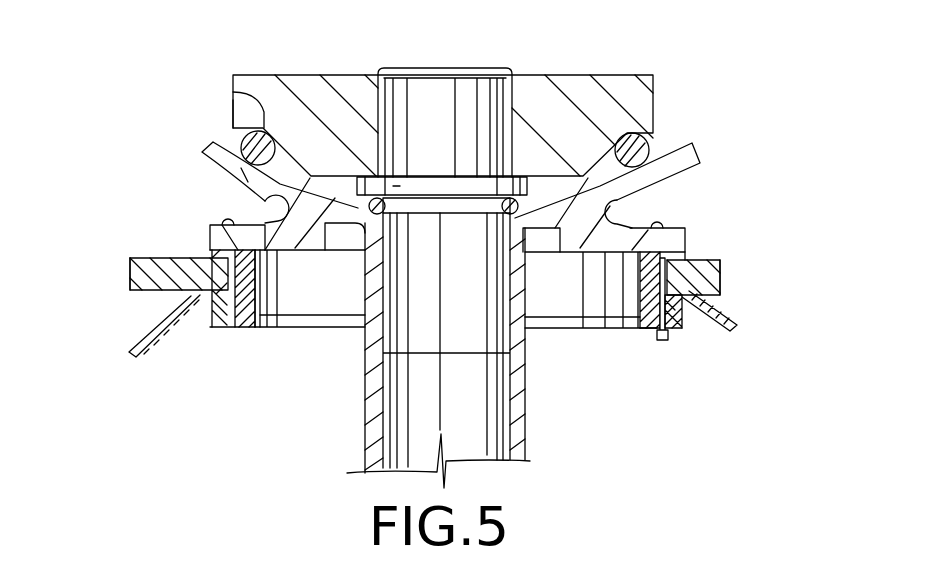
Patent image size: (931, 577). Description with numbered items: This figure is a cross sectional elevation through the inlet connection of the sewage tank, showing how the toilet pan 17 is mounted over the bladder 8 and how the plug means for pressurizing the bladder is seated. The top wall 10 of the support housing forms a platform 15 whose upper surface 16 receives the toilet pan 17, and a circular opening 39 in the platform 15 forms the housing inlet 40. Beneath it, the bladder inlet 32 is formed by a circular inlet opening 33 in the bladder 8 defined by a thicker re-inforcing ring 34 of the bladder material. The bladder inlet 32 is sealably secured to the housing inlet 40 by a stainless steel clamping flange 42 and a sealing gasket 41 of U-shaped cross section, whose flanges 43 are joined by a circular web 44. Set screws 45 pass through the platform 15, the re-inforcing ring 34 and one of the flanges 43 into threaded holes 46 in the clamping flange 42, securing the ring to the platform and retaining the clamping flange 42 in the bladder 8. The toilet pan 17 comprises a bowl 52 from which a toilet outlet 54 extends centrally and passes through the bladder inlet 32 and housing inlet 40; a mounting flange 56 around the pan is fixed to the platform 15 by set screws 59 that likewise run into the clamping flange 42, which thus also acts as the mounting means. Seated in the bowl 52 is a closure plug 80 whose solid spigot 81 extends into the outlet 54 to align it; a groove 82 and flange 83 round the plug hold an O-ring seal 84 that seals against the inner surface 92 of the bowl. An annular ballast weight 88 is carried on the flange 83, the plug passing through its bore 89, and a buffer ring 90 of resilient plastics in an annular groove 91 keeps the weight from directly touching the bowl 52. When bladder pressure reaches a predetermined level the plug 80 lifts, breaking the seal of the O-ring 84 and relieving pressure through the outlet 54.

The bladder 8 is at (157, 322).
The top wall 10 is at (138, 284).
The platform 15 is at (138, 270).
The upper surface 16 is at (178, 252).
The toilet pan 17 is at (686, 150).
The bladder inlet 32 is at (650, 335).
The inlet opening 33 is at (258, 333).
The re-inforcing ring 34 is at (692, 322).
The opening 39 is at (266, 327).
The housing inlet 40 is at (257, 222).
The sealing gasket 41 is at (282, 332).
The clamping flange 42 is at (560, 332).
The flanges 43 is at (686, 257).
The web 44 is at (637, 295).
The set screws 45 is at (713, 263).
The threaded holes 46 is at (667, 340).
The bowl 52 is at (205, 150).
The toilet outlet 54 is at (416, 402).
The mounting flange 56 is at (622, 222).
The set screws 59 is at (652, 230).
The closure plug 80 is at (467, 90).
The spigot 81 is at (444, 335).
The groove 82 is at (479, 212).
The flange 83 is at (374, 197).
The O-ring seal 84 is at (393, 186).
The ballast weight 88 is at (273, 92).
The bore 89 is at (383, 98).
The buffer ring 90 is at (246, 135).
The annular groove 91 is at (235, 93).
The inner surface 92 is at (313, 177).